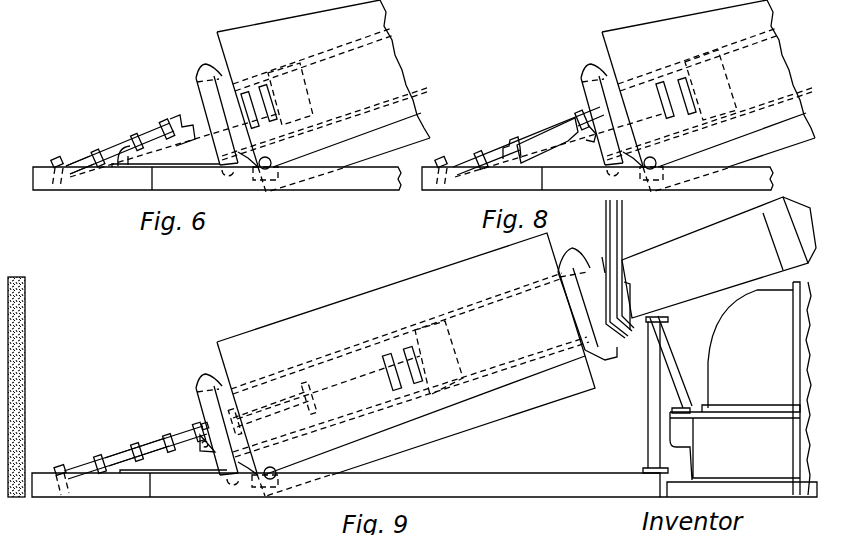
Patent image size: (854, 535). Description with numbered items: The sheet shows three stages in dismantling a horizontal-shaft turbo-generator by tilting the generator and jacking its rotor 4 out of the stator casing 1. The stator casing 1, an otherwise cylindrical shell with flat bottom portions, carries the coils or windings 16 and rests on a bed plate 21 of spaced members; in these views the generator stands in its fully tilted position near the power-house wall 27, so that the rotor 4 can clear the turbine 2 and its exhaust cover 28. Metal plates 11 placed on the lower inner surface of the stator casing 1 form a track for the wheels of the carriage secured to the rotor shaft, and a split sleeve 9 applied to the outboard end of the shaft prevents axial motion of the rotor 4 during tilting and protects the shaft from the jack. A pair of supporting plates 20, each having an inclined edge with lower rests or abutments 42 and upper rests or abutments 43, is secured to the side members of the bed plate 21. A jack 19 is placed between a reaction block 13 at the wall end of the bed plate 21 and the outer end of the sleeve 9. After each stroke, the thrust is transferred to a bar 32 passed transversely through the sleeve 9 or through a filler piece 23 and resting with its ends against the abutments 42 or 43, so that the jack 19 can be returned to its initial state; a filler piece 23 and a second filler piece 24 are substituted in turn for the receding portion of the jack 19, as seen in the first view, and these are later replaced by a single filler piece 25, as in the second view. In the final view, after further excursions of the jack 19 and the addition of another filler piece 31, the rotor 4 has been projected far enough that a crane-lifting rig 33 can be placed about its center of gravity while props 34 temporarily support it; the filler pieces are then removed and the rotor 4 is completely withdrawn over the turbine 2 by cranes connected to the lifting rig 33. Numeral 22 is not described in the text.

In FIG. 9, the stator casing 1 is at (329, 309).
In FIG. 9, the turbine 2 is at (805, 286).
In FIG. 6, the rotor 4 is at (342, 42).
In FIG. 8, the rotor 4 is at (752, 40).
In FIG. 9, the rotor 4 is at (700, 240).
In FIG. 6, the sleeve 9 is at (197, 110).
In FIG. 8, the sleeve 9 is at (583, 107).
In FIG. 9, the sleeve 9 is at (372, 360).
In FIG. 6, the metal plates 11 is at (340, 115).
In FIG. 8, the metal plates 11 is at (760, 103).
In FIG. 9, the metal plates 11 is at (527, 362).
In FIG. 6, the reaction block 13 is at (277, 127).
In FIG. 8, the reaction block 13 is at (698, 117).
In FIG. 9, the reaction block 13 is at (428, 387).
In FIG. 6, the coils or windings 16 is at (197, 70).
In FIG. 8, the coils or windings 16 is at (583, 68).
In FIG. 9, the coils or windings 16 is at (197, 375).
In FIG. 6, the jack 19 is at (85, 157).
In FIG. 8, the jack 19 is at (476, 155).
In FIG. 9, the jack 19 is at (85, 466).
In FIG. 6, the supporting plates 20 is at (178, 160).
In FIG. 9, the supporting plates 20 is at (170, 462).
In FIG. 6, the bed plate 21 is at (316, 184).
In FIG. 8, the bed plate 21 is at (692, 183).
In FIG. 9, the bed plate 21 is at (528, 491).
In FIG. 6, the pivot 22 is at (265, 159).
In FIG. 8, the pivot 22 is at (655, 161).
In FIG. 9, the pivot 22 is at (267, 469).
In FIG. 6, the filler piece 23 is at (141, 134).
In FIG. 9, the filler piece 23 is at (202, 420).
In FIG. 6, the second filler piece 24 is at (106, 151).
In FIG. 9, the second filler piece 24 is at (167, 435).
In FIG. 8, the single filler piece 25 is at (543, 128).
In FIG. 9, the single filler piece 25 is at (273, 400).
In FIG. 9, the wall 27 is at (25, 314).
In FIG. 9, the exhaust cover 28 is at (722, 323).
In FIG. 9, the filler piece 31 is at (152, 445).
In FIG. 6, the bar 32 is at (127, 143).
In FIG. 8, the bar 32 is at (587, 143).
In FIG. 9, the bar 32 is at (201, 452).
In FIG. 9, the crane-lifting rig 33 is at (622, 231).
In FIG. 9, the props 34 is at (670, 342).
In FIG. 6, the lower rests or abutments 42 is at (133, 178).
In FIG. 8, the lower rests or abutments 42 is at (517, 138).
In FIG. 9, the lower rests or abutments 42 is at (128, 456).
In FIG. 6, the upper rests or abutments 43 is at (168, 121).
In FIG. 8, the upper rests or abutments 43 is at (578, 115).
In FIG. 9, the upper rests or abutments 43 is at (193, 427).